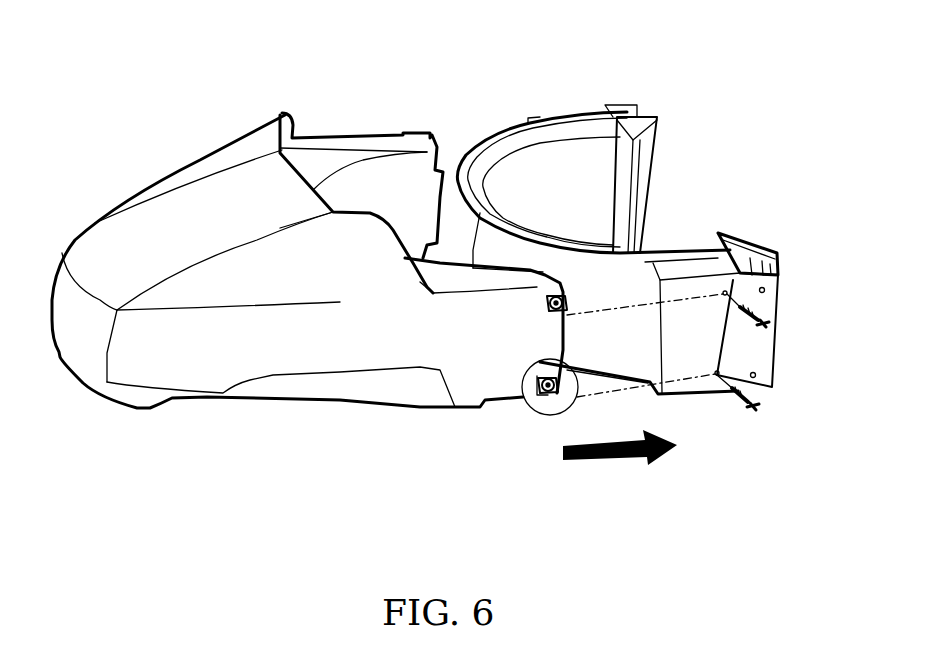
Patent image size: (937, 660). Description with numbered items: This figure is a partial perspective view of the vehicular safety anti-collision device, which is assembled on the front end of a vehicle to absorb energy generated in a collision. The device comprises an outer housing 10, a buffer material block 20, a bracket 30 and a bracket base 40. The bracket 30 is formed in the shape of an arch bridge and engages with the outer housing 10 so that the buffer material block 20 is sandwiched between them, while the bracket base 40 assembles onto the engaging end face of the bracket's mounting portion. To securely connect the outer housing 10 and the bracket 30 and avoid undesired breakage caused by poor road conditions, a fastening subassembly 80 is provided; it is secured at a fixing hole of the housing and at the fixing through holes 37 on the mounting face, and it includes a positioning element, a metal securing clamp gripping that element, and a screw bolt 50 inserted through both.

The outer housing 10 is at (142, 252).
The buffer material block 20 is at (328, 165).
The bracket 30 is at (528, 180).
The bracket base 40 is at (626, 108).
The fixing through holes 37 is at (762, 288).
The screw bolt 50 is at (767, 330).
The fastening subassembly 80 is at (527, 405).